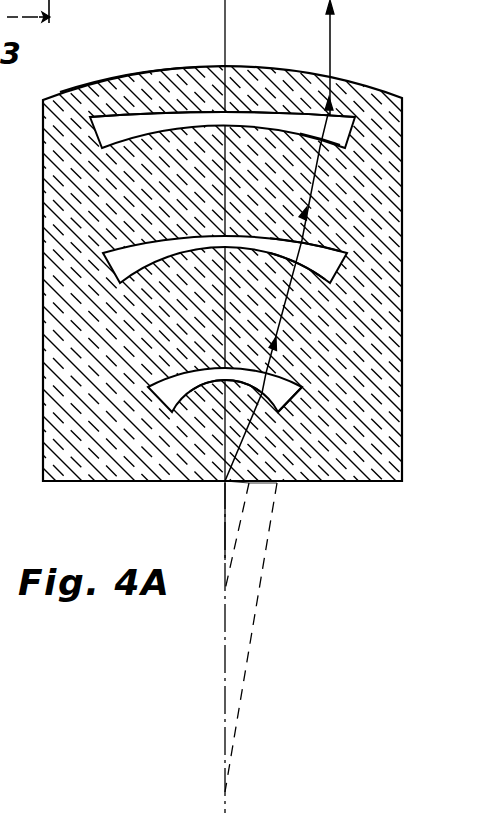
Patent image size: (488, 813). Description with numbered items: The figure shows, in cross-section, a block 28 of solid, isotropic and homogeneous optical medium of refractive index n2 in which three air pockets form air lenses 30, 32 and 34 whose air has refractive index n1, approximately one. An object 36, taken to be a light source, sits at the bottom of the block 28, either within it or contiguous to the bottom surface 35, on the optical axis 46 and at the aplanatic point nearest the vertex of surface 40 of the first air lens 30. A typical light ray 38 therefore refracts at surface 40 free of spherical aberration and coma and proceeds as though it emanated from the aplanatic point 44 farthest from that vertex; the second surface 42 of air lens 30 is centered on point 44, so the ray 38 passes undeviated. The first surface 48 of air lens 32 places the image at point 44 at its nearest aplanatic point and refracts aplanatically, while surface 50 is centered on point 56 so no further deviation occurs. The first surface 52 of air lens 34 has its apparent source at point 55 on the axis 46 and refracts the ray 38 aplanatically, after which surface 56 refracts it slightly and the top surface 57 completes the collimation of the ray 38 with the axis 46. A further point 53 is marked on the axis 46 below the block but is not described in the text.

The block 28 is at (402, 255).
The air lens 30 is at (168, 389).
The air lens 32 is at (160, 251).
The air lens 34 is at (168, 124).
The bottom surface 35 is at (310, 482).
The object 36 is at (226, 483).
The light ray 38 is at (333, 33).
The surface 40 is at (185, 390).
The second surface 42 is at (285, 382).
The aplanatic point 44 is at (225, 526).
The optical axis 46 is at (223, 13).
The first surface 48 is at (316, 273).
The surface 50 is at (325, 250).
The first surface 52 is at (332, 146).
The virtual focus point 53 is at (225, 586).
The point 55 is at (225, 792).
The surface 56 is at (270, 117).
The top surface 57 is at (128, 76).
The refractive index of air n1 is at (357, 128).
The refractive index of optical medium n2 is at (378, 442).